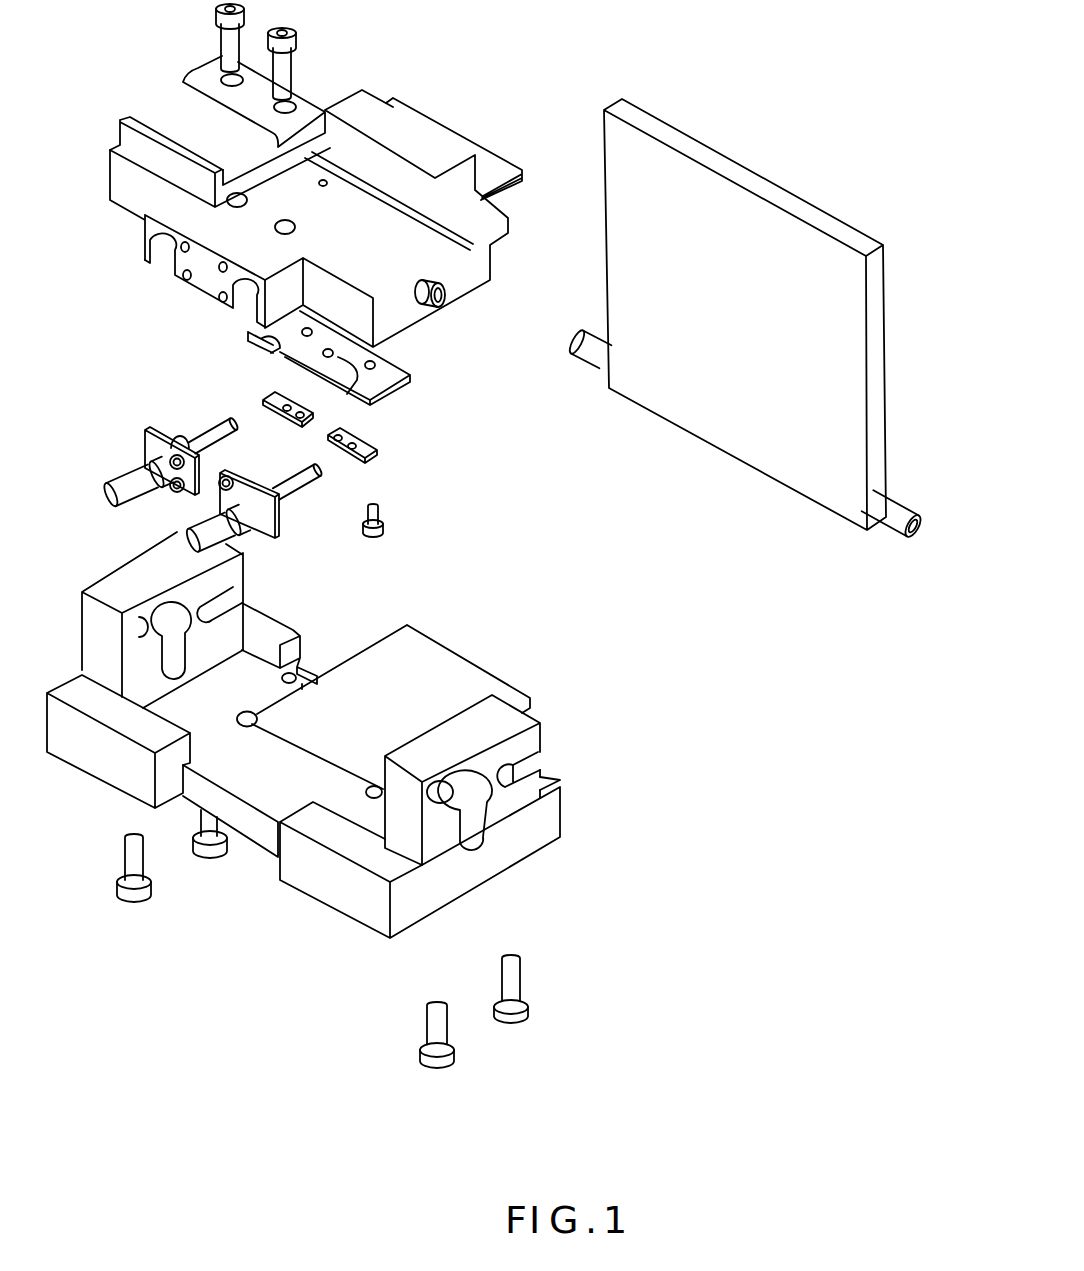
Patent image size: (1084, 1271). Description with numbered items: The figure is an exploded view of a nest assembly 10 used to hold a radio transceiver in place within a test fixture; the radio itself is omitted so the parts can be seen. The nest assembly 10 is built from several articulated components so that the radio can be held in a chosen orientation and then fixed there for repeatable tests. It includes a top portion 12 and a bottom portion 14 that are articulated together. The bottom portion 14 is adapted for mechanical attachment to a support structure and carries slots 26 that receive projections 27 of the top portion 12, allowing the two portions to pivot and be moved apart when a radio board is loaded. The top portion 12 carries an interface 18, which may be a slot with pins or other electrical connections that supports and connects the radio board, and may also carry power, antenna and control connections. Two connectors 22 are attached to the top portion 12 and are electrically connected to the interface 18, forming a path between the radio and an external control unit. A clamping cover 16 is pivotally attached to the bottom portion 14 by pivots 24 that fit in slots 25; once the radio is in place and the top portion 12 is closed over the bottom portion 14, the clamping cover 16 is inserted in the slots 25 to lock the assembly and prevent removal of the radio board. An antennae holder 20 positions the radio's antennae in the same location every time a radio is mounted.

The nest assembly 10 is at (728, 800).
The top portion 12 is at (383, 97).
The bottom portion 14 is at (330, 890).
The clamping cover 16 is at (808, 213).
The interface 18 is at (500, 157).
The antennae holder 20 is at (393, 395).
The connectors 22 is at (120, 473).
The pivots 24 is at (895, 509).
The slots 25 is at (527, 767).
The slots 26 is at (465, 827).
The projections 27 is at (438, 305).